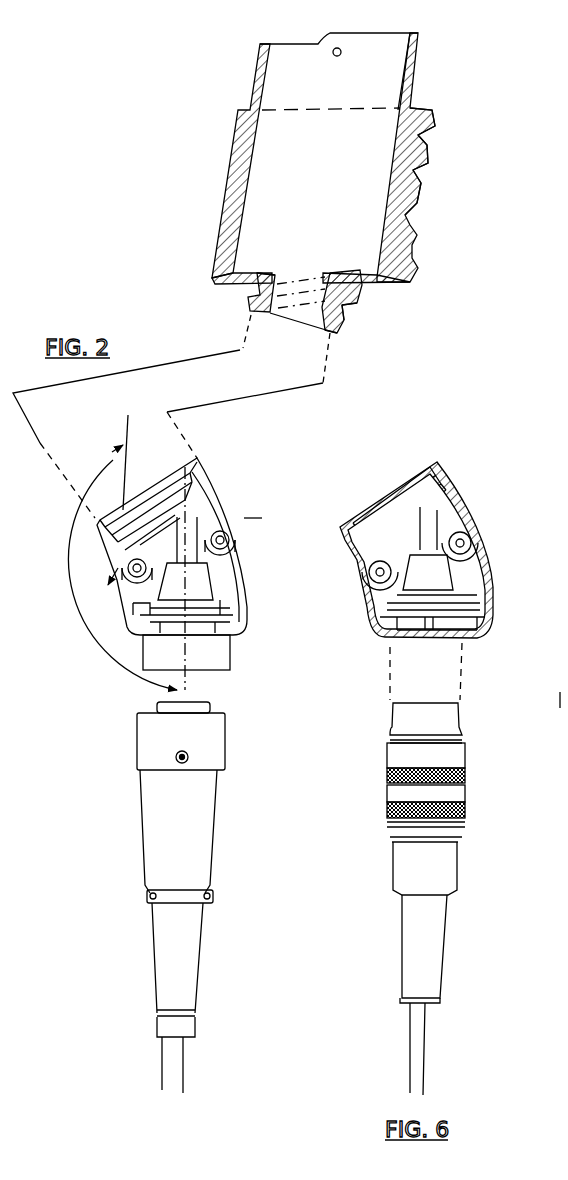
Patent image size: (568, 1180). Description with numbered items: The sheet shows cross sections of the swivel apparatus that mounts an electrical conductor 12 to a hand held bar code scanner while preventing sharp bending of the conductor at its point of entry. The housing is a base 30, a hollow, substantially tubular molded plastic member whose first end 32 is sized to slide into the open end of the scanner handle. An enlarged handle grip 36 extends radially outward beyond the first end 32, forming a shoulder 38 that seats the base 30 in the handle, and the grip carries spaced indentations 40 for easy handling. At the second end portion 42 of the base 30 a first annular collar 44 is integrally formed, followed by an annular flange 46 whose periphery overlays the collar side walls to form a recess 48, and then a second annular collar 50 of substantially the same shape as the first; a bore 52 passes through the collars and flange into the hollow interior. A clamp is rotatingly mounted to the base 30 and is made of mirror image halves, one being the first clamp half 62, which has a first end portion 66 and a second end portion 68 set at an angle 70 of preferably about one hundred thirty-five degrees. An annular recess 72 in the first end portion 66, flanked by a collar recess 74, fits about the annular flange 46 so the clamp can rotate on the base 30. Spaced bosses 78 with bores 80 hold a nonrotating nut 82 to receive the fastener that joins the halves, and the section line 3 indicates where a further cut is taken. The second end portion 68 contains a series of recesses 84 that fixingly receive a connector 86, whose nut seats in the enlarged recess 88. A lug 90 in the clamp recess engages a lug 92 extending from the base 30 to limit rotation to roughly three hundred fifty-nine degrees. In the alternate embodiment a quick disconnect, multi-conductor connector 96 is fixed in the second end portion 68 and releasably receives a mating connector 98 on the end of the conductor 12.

In FIG. 2, the section line 3 is at (262, 518).
In FIG. 2, the electrical conductor 12 is at (183, 988).
In FIG. 6, the electrical conductor 12 is at (425, 1043).
In FIG. 2, the base 30 is at (215, 128).
In FIG. 2, the first end 32 is at (418, 50).
In FIG. 2, the handle grip 36 is at (420, 150).
In FIG. 2, the shoulder 38 is at (416, 110).
In FIG. 2, the indentations 40 is at (414, 161).
In FIG. 2, the second end portion 42 is at (358, 297).
In FIG. 2, the first annular collar 44 is at (348, 307).
In FIG. 2, the annular flange 46 is at (247, 307).
In FIG. 2, the recess 48 is at (257, 292).
In FIG. 2, the second annular collar 50 is at (346, 314).
In FIG. 2, the bore 52 is at (297, 262).
In FIG. 2, the first clamp half 62 is at (97, 526).
In FIG. 2, the first end portion 66 is at (93, 503).
In FIG. 2, the second end portion 68 is at (133, 630).
In FIG. 2, the angle 70 is at (123, 670).
In FIG. 2, the annular recess 72 is at (133, 556).
In FIG. 2, the recess 74 is at (83, 382).
In FIG. 2, the bosses 78 is at (123, 617).
In FIG. 2, the bores 80 is at (117, 569).
In FIG. 6, the bores 80 is at (477, 530).
In FIG. 2, the nut 82 is at (122, 568).
In FIG. 2, the recesses 84 is at (163, 622).
In FIG. 2, the connector 86 is at (215, 813).
In FIG. 2, the enlarged recess 88 is at (230, 622).
In FIG. 2, the lug 90 is at (182, 557).
In FIG. 6, the lug 90 is at (398, 510).
In FIG. 2, the lug 92 is at (337, 328).
In FIG. 6, the quick disconnect, multi-conductor connector 96 is at (428, 642).
In FIG. 6, the mating connector 98 is at (472, 757).